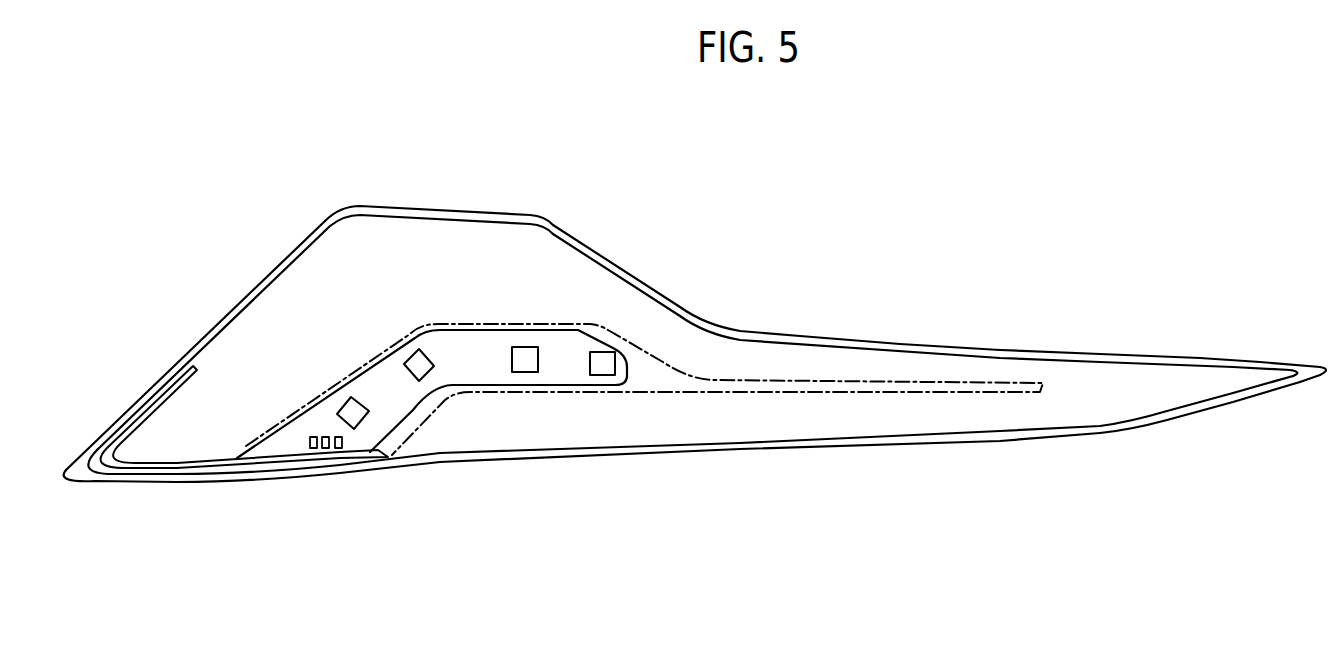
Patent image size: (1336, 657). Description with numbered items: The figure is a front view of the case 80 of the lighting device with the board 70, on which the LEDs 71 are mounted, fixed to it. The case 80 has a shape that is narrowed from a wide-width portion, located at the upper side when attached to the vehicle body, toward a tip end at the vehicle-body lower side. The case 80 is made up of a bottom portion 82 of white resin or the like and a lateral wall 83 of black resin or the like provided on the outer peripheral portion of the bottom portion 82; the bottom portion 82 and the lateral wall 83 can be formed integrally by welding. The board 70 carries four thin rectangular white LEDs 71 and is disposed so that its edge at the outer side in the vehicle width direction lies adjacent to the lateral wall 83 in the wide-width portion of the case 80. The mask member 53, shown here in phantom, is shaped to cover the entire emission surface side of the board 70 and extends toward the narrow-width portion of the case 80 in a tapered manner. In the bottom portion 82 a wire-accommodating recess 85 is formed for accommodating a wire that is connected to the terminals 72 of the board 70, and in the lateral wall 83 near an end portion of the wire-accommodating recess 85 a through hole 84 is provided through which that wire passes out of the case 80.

The mask member 53 is at (663, 360).
The board 70 is at (479, 367).
The LEDs 71 is at (352, 410).
The terminals 72 is at (338, 450).
The case 80 is at (825, 270).
The bottom portion 82 is at (673, 415).
The lateral wall 83 is at (817, 447).
The through hole 84 is at (160, 368).
The wire-accommodating recess 85 is at (158, 412).